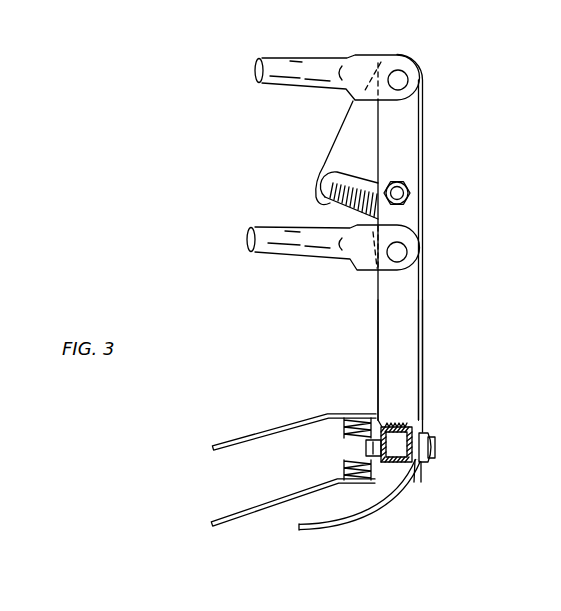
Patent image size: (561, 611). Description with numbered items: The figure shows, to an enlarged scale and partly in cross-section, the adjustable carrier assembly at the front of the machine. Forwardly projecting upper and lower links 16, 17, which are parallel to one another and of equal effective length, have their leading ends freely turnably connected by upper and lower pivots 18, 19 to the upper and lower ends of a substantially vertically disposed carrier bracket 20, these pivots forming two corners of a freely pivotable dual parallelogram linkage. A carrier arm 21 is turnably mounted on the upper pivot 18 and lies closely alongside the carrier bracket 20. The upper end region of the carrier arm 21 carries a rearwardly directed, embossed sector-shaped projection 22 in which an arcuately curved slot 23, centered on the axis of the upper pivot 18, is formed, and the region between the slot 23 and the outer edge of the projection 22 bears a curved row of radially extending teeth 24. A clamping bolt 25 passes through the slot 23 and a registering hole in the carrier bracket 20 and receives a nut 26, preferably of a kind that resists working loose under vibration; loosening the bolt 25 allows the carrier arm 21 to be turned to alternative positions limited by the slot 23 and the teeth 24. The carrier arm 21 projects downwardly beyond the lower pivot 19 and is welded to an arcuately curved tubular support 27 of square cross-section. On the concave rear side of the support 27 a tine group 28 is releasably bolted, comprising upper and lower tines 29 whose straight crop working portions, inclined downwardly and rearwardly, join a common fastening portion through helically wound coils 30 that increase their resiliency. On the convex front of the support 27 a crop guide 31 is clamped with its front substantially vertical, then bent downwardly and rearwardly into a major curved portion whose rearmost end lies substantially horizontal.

The upper link 16 is at (283, 60).
The lower link 17 is at (266, 254).
The upper pivot 18 is at (405, 80).
The lower pivot 19 is at (402, 251).
The carrier bracket 20 is at (415, 138).
The carrier arm 21 is at (418, 327).
The sector-shaped projection 22 is at (347, 133).
The arcuately curved slot 23 is at (337, 177).
The teeth 24 is at (325, 198).
The clamping bolt 25 is at (410, 180).
The nut 26 is at (412, 198).
The curved tubular support 27 is at (412, 428).
The tine group 28 is at (212, 489).
The tine 29 is at (281, 498).
The helically wound coil 30 is at (348, 465).
The crop guide 31 is at (318, 528).